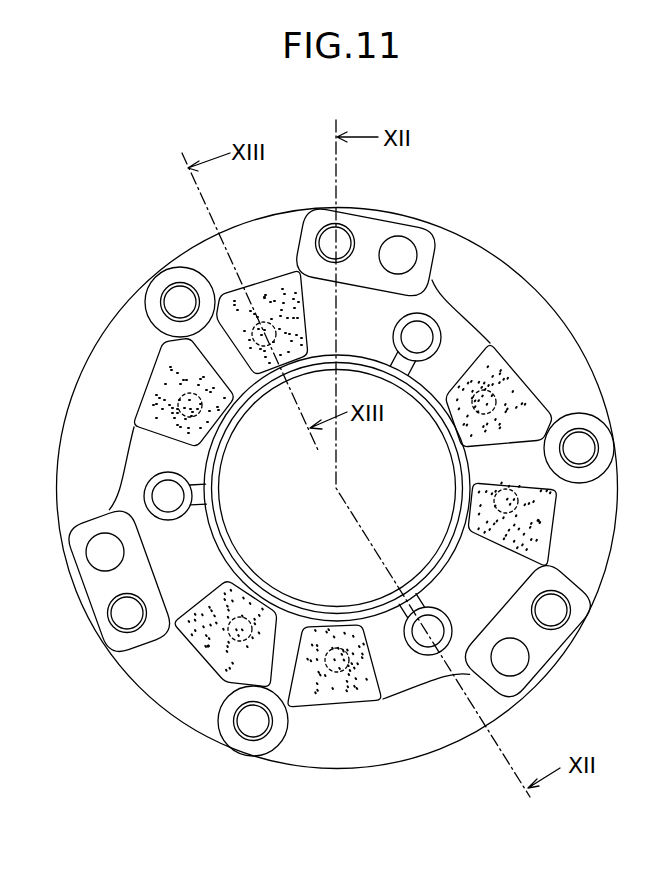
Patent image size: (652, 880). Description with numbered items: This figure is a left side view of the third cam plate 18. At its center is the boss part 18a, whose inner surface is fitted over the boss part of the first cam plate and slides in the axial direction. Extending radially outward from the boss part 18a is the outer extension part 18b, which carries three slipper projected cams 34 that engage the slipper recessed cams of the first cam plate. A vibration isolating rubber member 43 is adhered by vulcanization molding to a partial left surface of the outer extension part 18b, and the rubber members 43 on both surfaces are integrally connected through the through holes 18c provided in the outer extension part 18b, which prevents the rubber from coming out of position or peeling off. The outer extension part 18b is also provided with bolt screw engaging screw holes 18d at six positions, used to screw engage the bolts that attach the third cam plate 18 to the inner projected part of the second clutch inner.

The third cam plate 18 is at (124, 117).
The boss part 18a is at (452, 430).
The outer extension part 18b is at (535, 325).
The through holes 18c is at (200, 645).
The screw holes 18d is at (343, 242).
The slipper projected cams 34 is at (418, 335).
The vibration isolating rubber member 43 is at (237, 633).